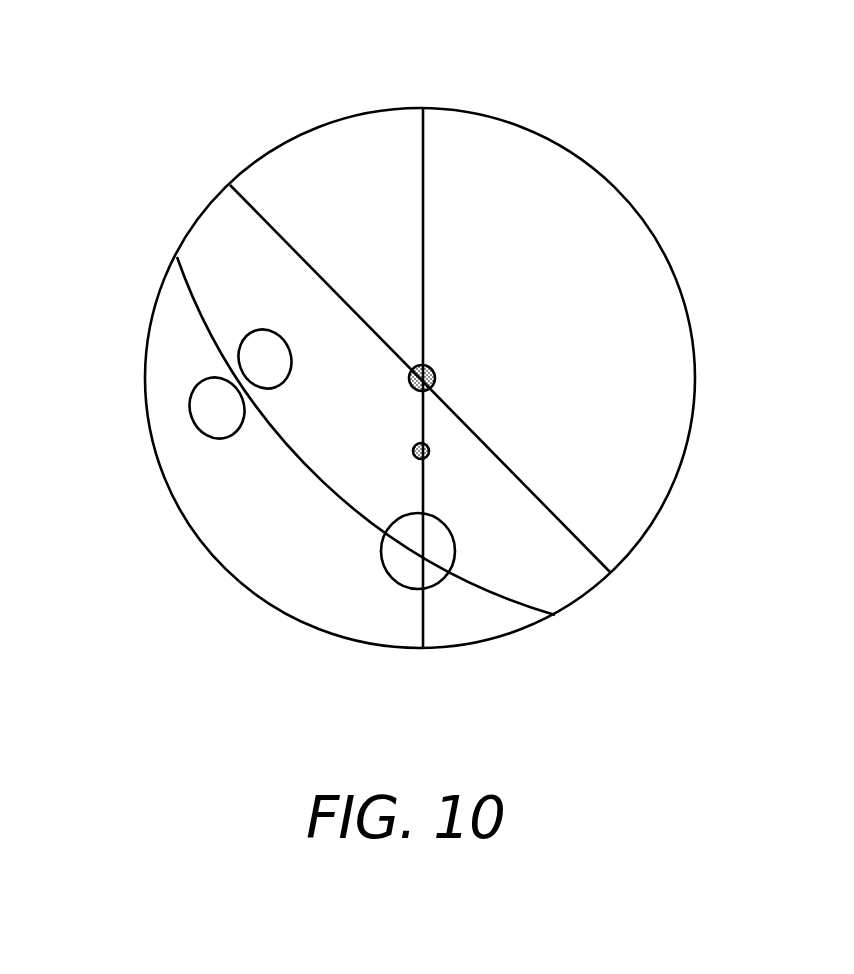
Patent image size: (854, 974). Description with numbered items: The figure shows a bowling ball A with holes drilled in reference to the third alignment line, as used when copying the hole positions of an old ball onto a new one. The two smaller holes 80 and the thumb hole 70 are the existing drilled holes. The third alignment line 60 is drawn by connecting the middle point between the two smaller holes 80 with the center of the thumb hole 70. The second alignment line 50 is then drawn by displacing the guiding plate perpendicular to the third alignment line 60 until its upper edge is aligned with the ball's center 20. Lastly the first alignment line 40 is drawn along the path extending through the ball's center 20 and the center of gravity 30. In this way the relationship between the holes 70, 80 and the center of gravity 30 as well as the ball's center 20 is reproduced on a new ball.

The bowling ball A is at (588, 168).
The ball's center 20 is at (445, 372).
The center of gravity 30 is at (430, 460).
The first alignment line 40 is at (420, 140).
The second alignment line 50 is at (275, 233).
The third alignment line 60 is at (313, 475).
The thumb hole 70 is at (410, 575).
The smaller holes 80 is at (207, 402).